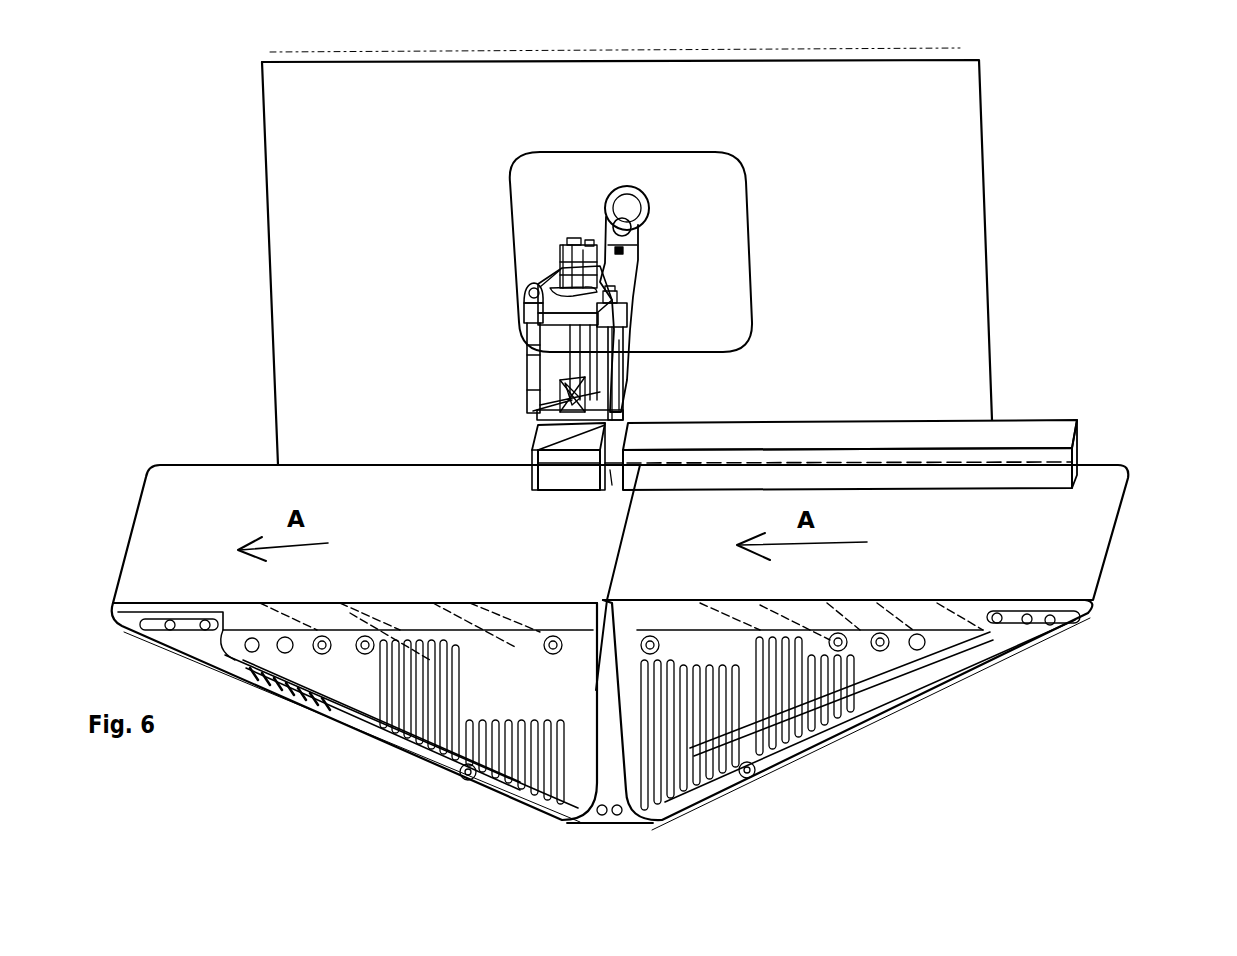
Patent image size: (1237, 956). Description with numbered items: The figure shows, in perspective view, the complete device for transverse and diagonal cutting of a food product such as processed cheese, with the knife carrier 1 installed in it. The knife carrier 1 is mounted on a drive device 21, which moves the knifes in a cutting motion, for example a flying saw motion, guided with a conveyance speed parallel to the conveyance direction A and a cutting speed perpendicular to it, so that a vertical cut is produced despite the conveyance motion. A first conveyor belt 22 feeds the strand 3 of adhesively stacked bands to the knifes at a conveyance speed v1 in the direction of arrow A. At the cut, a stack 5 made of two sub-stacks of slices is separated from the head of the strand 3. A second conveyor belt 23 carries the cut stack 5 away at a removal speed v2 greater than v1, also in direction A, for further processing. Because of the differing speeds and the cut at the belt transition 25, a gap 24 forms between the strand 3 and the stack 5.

The knife carrier 1 is at (503, 334).
The strand 3 is at (1023, 432).
The stack 5 is at (527, 482).
The drive device 21 is at (652, 187).
The first conveyor belt 22 is at (1065, 560).
The second conveyor belt 23 is at (237, 487).
The gap 24 is at (614, 483).
The belt transition 25 is at (634, 533).